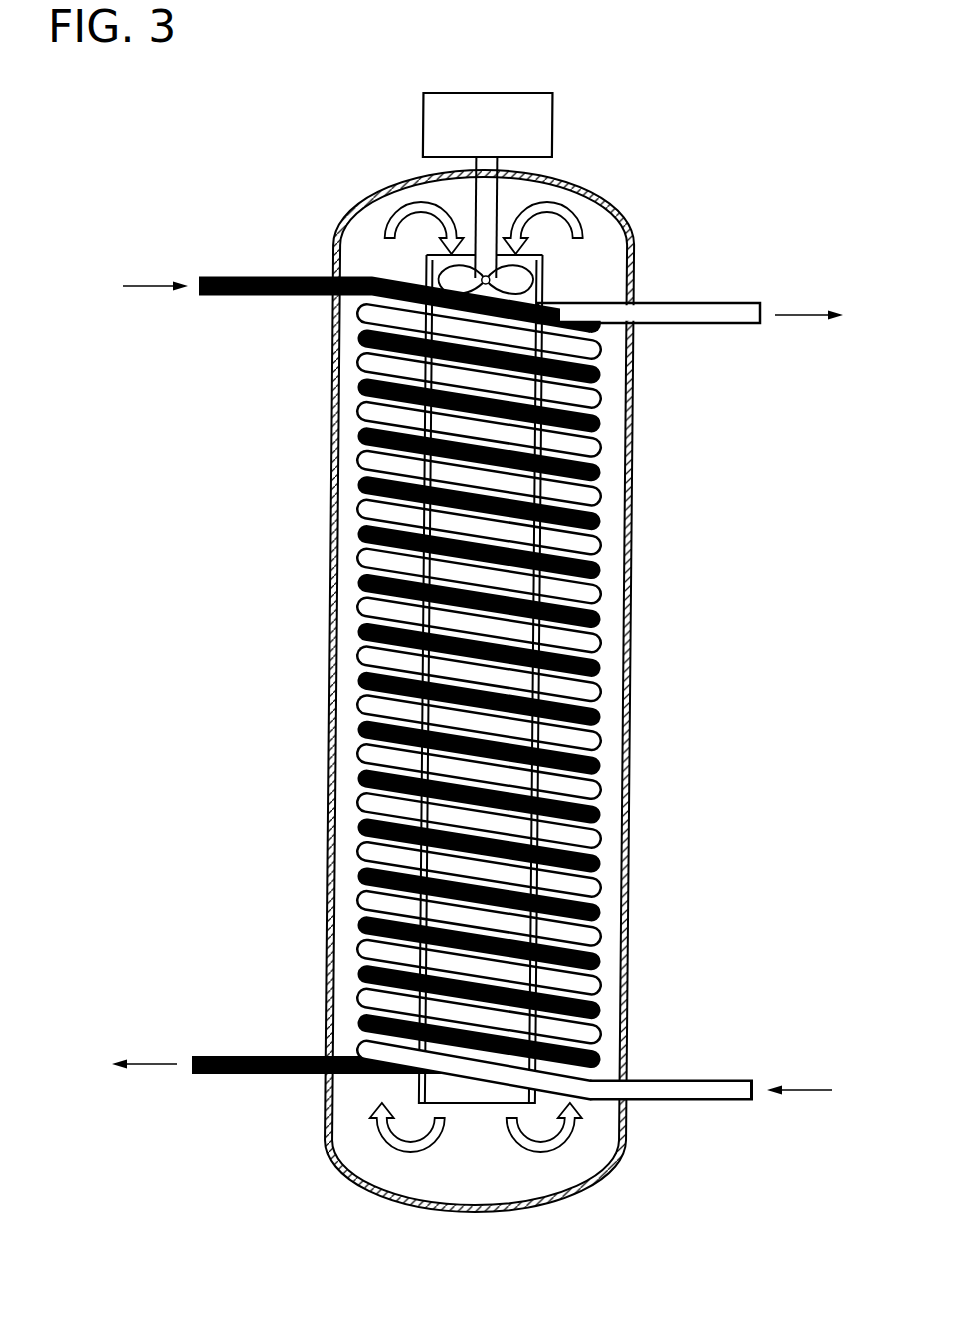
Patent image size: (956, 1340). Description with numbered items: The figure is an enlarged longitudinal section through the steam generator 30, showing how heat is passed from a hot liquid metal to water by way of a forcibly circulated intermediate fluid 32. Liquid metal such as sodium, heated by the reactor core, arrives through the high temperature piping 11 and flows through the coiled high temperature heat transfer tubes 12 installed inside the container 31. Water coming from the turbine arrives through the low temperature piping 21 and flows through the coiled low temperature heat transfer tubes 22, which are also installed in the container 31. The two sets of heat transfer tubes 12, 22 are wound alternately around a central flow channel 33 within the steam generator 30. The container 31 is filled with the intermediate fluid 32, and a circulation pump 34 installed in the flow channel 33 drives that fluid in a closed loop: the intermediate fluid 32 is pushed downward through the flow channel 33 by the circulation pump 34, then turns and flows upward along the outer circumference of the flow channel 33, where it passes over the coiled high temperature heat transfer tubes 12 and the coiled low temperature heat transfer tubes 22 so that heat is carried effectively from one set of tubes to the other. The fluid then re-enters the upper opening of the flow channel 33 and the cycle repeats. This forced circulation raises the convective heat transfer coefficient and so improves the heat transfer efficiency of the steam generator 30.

The high temperature piping 11 is at (262, 1055).
The coiled high temperature heat transfer tubes 12 is at (357, 631).
The low temperature piping 21 is at (690, 1088).
The coiled low temperature heat transfer tubes 22 is at (598, 695).
The steam generator 30 is at (425, 719).
The container 31 is at (615, 1150).
The intermediate fluid 32 is at (414, 1181).
The flow channel 33 is at (479, 1096).
The circulation pump 34 is at (490, 212).